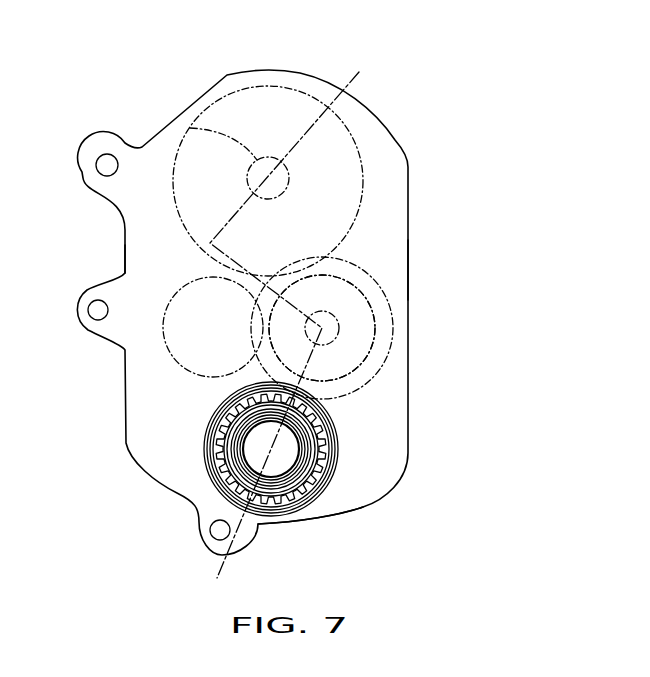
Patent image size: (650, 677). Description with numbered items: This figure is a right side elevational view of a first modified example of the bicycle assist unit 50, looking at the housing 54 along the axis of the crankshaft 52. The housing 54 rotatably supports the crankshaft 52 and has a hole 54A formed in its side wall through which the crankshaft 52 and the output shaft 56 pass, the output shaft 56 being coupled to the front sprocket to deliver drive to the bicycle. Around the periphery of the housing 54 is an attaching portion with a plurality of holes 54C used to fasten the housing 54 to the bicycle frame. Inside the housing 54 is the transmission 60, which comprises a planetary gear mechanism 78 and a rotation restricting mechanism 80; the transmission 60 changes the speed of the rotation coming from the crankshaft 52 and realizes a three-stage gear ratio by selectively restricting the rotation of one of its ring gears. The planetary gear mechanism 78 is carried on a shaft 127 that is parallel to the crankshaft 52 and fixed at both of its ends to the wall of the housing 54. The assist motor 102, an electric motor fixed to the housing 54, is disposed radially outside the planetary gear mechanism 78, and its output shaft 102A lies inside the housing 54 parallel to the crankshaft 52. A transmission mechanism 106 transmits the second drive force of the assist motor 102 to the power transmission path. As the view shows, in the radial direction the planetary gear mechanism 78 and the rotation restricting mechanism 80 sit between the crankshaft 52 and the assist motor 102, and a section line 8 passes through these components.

The section line 8- 8 is at (357, 71).
The assist unit 50 is at (458, 110).
The crankshaft 52 is at (338, 441).
The housing 54 is at (409, 203).
The hole 54A is at (305, 524).
The holes 54C is at (98, 172).
The output shaft 56 is at (332, 485).
The transmission 60 is at (410, 272).
The planetary gear mechanism 78 is at (393, 327).
The rotation restricting mechanism 80 is at (178, 358).
The assist motor 102 is at (360, 128).
The output shaft 102A is at (185, 128).
The transmission mechanism 106 is at (125, 258).
The shaft 127 is at (380, 366).